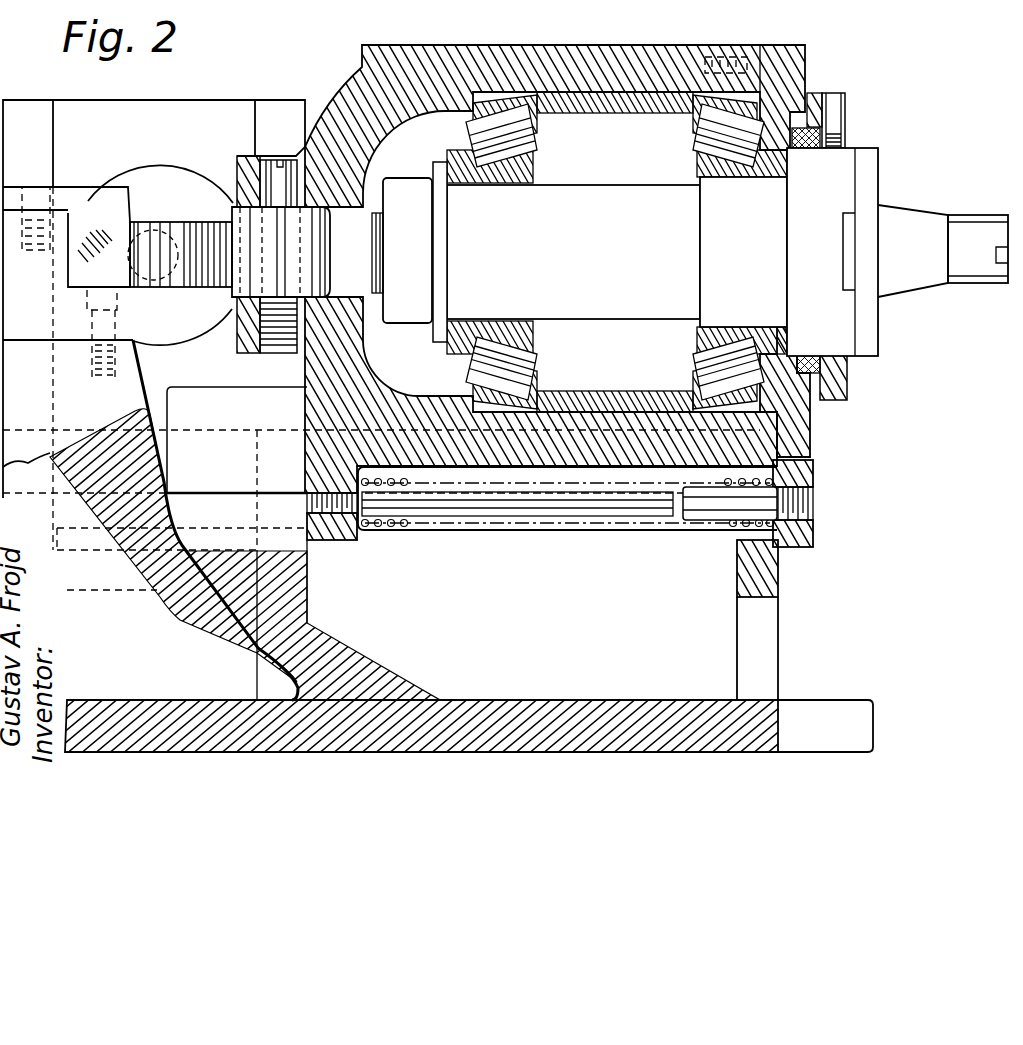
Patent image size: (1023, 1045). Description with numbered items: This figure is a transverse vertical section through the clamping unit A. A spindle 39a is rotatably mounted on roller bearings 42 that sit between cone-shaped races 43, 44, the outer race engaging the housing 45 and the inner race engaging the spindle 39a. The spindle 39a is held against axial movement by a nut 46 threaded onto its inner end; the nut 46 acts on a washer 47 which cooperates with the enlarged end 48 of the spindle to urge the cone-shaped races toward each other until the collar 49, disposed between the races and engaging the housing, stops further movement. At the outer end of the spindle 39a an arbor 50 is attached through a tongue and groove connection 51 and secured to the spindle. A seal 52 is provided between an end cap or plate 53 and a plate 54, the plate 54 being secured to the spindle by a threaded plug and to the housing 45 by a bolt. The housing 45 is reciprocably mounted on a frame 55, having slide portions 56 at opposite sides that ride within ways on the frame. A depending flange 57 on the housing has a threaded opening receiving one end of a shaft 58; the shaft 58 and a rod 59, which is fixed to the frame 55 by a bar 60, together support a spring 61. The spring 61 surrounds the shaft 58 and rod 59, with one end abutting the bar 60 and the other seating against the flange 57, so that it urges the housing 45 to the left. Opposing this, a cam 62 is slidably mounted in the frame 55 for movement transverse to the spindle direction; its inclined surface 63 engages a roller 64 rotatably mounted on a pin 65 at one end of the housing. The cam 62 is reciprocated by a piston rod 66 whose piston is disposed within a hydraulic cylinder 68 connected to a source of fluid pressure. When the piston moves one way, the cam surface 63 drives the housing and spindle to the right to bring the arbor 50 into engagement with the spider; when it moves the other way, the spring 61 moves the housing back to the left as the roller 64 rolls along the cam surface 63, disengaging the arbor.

The clamping unit A is at (815, 65).
The spindle 39a is at (617, 252).
The roller bearings 42 is at (515, 148).
The cone-shaped race 43 is at (533, 118).
The cone-shaped race 44 is at (498, 178).
The housing 45 is at (595, 52).
The nut 46 is at (403, 180).
The washer 47 is at (443, 340).
The enlarged end 48 is at (845, 171).
The collar 49 is at (618, 392).
The arbor 50 is at (940, 290).
The tongue and groove connection 51 is at (845, 233).
The seal 52 is at (822, 362).
The end cap or plate 53 is at (800, 437).
The plate 54 is at (847, 402).
The frame 55 is at (786, 633).
The slide portions 56 is at (218, 440).
The depending flange 57 is at (350, 540).
The shaft 58 is at (562, 513).
The rod 59 is at (708, 520).
The bar 60 is at (810, 543).
The spring 61 is at (410, 527).
The cam 62 is at (96, 233).
The inclined surface 63 is at (195, 233).
The roller 64 is at (243, 300).
The pin 65 is at (267, 177).
The piston rod 66 is at (177, 283).
The hydraulic cylinder 68 is at (160, 177).